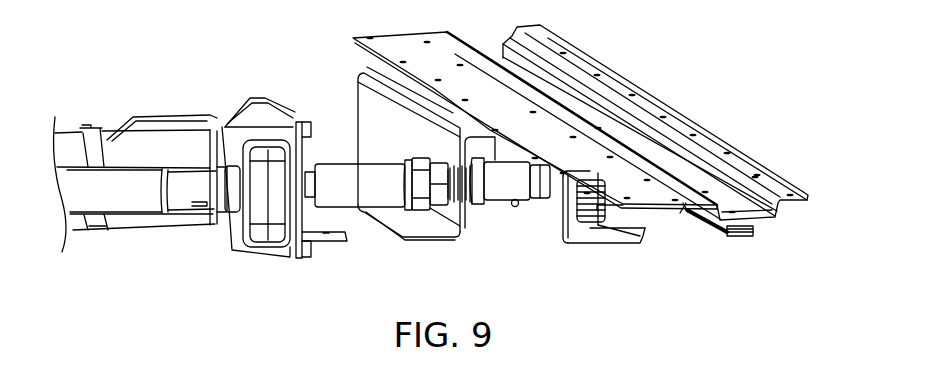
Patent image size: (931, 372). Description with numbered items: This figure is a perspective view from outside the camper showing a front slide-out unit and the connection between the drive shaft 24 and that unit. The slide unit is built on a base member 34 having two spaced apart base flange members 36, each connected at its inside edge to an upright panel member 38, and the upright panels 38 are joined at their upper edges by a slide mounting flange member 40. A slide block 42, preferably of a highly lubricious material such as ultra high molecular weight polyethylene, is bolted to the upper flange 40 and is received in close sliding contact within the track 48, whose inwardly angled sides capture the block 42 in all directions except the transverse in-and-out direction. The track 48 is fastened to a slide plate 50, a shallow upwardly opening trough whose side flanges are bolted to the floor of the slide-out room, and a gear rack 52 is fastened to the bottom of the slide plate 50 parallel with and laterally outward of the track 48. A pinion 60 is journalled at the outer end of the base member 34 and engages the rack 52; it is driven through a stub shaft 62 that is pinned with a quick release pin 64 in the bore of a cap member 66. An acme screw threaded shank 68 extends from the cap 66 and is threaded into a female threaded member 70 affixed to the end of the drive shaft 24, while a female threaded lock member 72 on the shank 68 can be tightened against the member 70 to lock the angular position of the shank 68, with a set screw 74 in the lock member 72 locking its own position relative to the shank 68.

The drive shaft 24 is at (348, 176).
The base member 34 is at (427, 242).
The base flange member 36 is at (620, 247).
The upright panel member 38 is at (553, 223).
The slide mounting flange member 40 is at (380, 77).
The slide block 42 is at (492, 133).
The track 48 is at (680, 213).
The slide plate 50 is at (773, 183).
The gear rack 52 is at (715, 236).
The pinion 60 is at (586, 230).
The stub shaft 62 is at (540, 200).
The quick release pin 64 is at (516, 208).
The cap member 66 is at (499, 200).
The acme screw threaded shank 68 is at (466, 200).
The female threaded member 70 is at (421, 162).
The female threaded lock member 72 is at (447, 207).
The set screw 74 is at (436, 165).